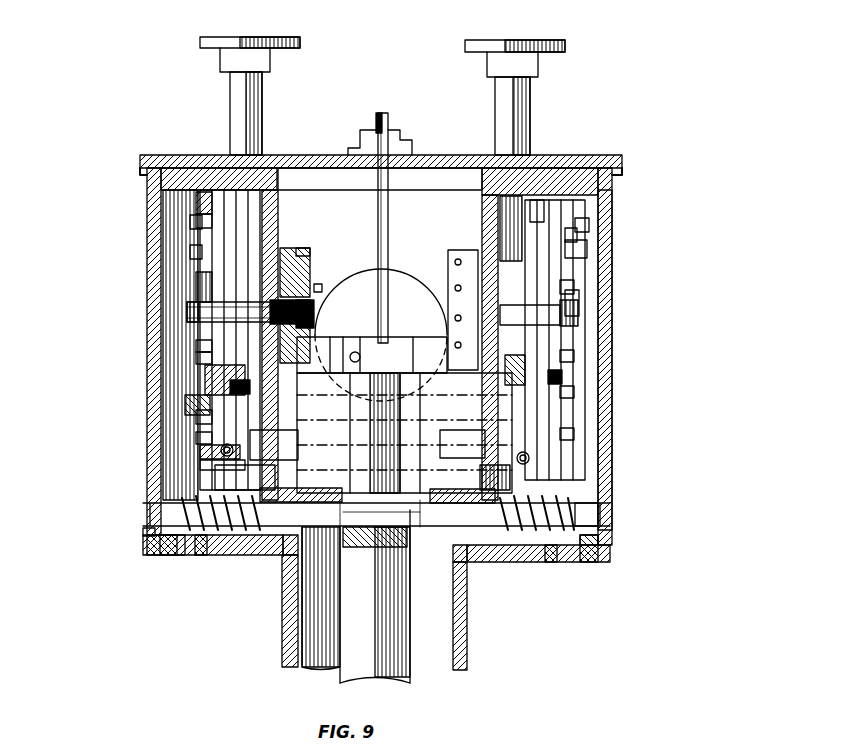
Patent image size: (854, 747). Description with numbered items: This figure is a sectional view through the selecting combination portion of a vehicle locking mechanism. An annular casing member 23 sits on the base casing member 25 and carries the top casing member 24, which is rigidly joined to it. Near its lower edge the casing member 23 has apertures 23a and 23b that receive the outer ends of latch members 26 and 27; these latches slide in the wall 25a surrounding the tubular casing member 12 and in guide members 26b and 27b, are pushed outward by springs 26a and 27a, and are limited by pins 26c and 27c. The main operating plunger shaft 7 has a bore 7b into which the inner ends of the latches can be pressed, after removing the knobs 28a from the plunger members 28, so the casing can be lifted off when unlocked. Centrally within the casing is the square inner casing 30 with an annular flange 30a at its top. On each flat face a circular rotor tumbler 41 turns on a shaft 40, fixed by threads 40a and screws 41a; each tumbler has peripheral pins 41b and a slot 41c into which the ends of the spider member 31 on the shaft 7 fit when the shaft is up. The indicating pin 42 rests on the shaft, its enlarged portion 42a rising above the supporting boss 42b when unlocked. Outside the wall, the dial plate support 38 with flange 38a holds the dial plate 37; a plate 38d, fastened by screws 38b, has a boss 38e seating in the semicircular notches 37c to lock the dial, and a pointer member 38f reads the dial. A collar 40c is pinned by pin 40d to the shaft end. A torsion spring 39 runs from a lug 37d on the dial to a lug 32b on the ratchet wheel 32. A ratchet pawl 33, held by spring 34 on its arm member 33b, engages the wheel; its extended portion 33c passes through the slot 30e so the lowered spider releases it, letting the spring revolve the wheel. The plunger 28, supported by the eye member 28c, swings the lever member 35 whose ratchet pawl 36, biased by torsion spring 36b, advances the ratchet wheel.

The main operating plunger shaft 7 is at (410, 684).
The bore 7b is at (406, 546).
The tubular casing member 12 is at (462, 640).
The casing member 23 is at (605, 412).
The aperture 23a is at (158, 510).
The aperture 23b is at (612, 505).
The casing member 24 is at (575, 168).
The casing member 25 is at (565, 562).
The wall 25a is at (276, 558).
The latch member 26 is at (245, 556).
The spring 26a is at (200, 556).
The guide member 26b is at (150, 556).
The pin 26c is at (143, 545).
The latch member 27 is at (518, 562).
The spring 27a is at (550, 562).
The guide member 27b is at (590, 565).
The pin 27c is at (598, 521).
The plunger member 28 is at (258, 100).
The knob 28a is at (260, 40).
The eye member 28c is at (150, 505).
The inner casing 30 is at (478, 212).
The annular flange 30a is at (172, 165).
The slot 30e is at (270, 484).
The spider member 31 is at (395, 345).
The ratchet wheel 32 is at (205, 376).
The lug 32b is at (205, 390).
The ratchet pawl 33 is at (200, 452).
The arm member 33b is at (200, 466).
The extended portion 33c is at (300, 452).
The spring 34 is at (222, 478).
The lever member 35 is at (266, 168).
The ratchet pawl 36 is at (486, 215).
The torsion spring 36b is at (575, 250).
The dial plate 37 is at (205, 262).
The semicircular notches 37c is at (200, 222).
The lug 37d is at (200, 252).
The dial plate support 38 is at (198, 236).
The flange 38a is at (205, 212).
The screws 38b is at (200, 344).
The plate 38d is at (200, 352).
The boss 38e is at (200, 408).
The pointer member 38f is at (205, 200).
The torsion spring 39 is at (200, 282).
The shaft 40 is at (190, 305).
The threads 40a is at (312, 318).
The collar 40c is at (200, 330).
The pin 40d is at (195, 312).
The rotor tumbler 41 is at (286, 250).
The screws 41a is at (318, 293).
The pins 41b is at (345, 258).
The slot 41c is at (345, 420).
The indicating pin 42 is at (390, 205).
The enlarged portion 42a is at (376, 115).
The supporting boss 42b is at (362, 143).